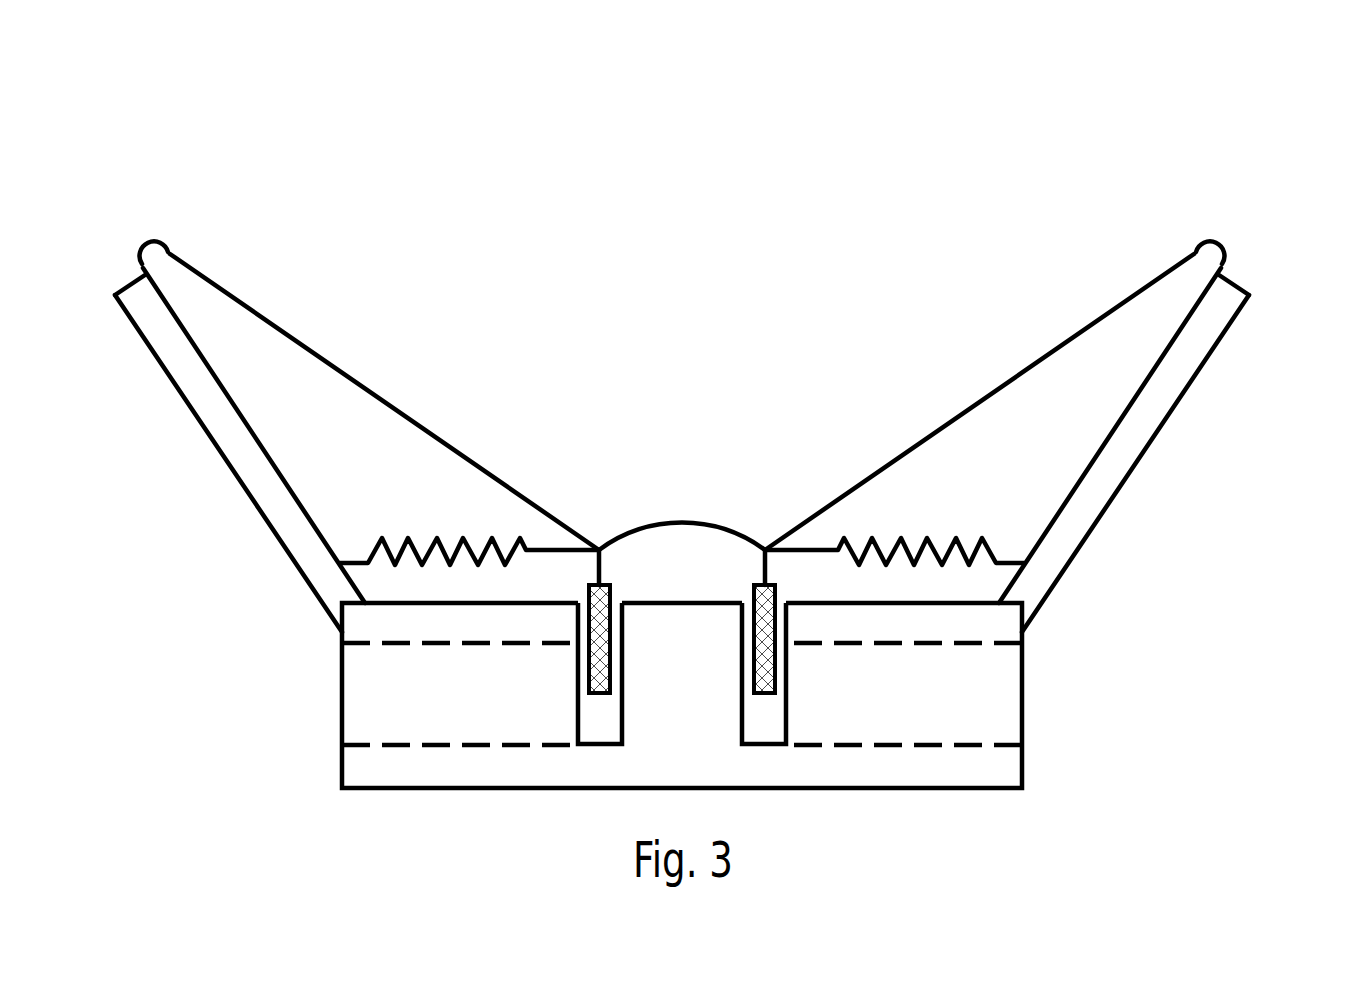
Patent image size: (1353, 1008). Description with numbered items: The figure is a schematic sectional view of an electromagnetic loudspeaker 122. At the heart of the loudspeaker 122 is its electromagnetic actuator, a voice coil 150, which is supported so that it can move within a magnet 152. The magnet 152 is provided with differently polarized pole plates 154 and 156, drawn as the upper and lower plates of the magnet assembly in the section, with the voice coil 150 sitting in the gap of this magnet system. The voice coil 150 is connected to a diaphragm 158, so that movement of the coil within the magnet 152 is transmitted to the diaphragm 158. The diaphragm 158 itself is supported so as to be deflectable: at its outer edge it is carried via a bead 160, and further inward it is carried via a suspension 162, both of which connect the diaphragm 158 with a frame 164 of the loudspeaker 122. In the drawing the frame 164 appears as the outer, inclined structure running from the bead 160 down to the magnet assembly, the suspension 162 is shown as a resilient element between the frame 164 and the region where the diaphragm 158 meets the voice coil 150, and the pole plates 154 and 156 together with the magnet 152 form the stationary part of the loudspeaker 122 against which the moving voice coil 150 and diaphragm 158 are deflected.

The electromagnetic loudspeaker 122 is at (1234, 104).
The voice coil 150 is at (598, 678).
The magnet 152 is at (1007, 693).
The pole plate 154 is at (1007, 621).
The pole plate 156 is at (1007, 765).
The diaphragm 158 is at (390, 401).
The bead 160 is at (158, 236).
The suspension 162 is at (408, 538).
The frame 164 is at (228, 466).